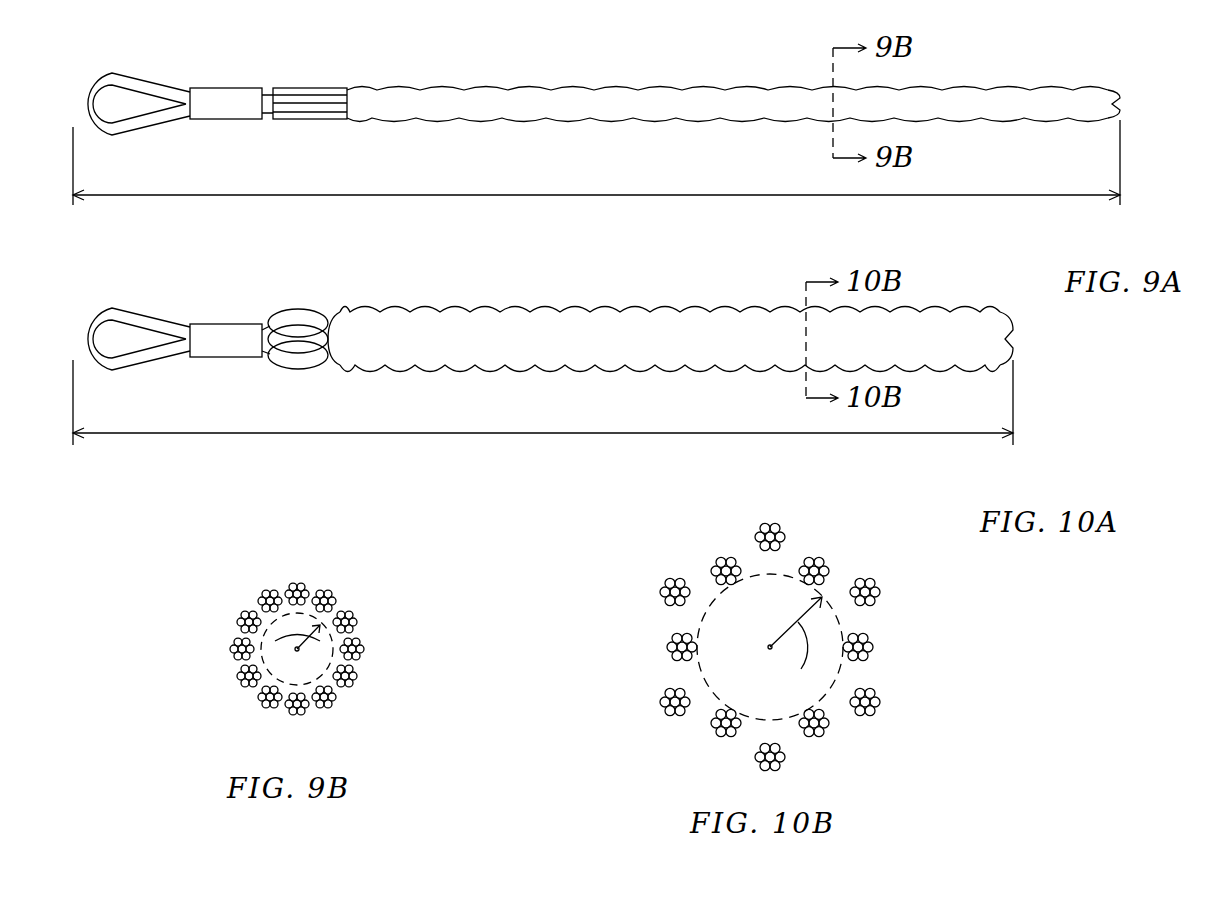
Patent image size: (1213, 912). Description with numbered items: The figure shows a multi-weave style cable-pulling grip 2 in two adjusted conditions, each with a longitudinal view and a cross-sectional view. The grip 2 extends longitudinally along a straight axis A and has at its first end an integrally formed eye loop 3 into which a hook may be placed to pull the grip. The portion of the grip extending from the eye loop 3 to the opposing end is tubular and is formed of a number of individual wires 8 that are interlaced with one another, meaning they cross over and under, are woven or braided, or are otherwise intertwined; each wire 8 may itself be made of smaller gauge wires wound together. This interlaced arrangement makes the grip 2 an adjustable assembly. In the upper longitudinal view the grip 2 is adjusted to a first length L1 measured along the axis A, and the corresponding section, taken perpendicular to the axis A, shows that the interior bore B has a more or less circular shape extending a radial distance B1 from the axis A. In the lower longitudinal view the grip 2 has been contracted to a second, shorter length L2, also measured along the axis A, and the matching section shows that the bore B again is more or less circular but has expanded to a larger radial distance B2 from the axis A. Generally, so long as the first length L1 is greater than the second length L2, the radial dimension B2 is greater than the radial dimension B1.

In FIG. 9A, the grip 2 is at (556, 67).
In FIG. 9A, the eye loop 3 is at (118, 72).
In FIG. 10A, the eye loop 3 is at (118, 308).
In FIG. 9A, the wires 8 is at (662, 85).
In FIG. 9A, the first length L1 is at (597, 195).
In FIG. 10A, the second length L2 is at (545, 433).
In FIG. 9B, the axis A is at (295, 650).
In FIG. 10B, the axis A is at (770, 647).
In FIG. 9B, the bore B is at (282, 640).
In FIG. 10B, the bore B is at (760, 624).
In FIG. 9B, the radial distance B1 is at (310, 640).
In FIG. 10B, the radial distance B2 is at (796, 642).